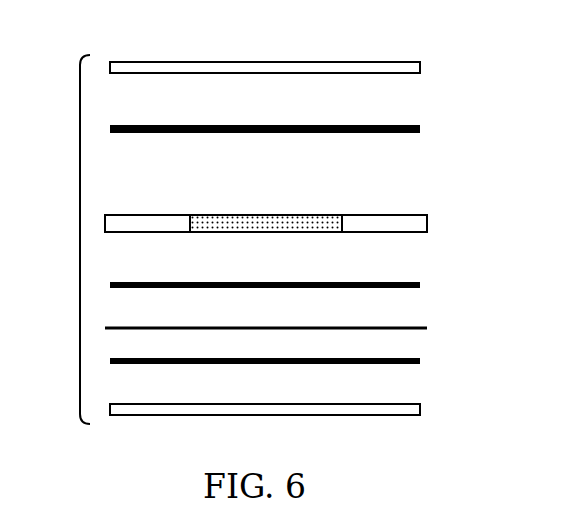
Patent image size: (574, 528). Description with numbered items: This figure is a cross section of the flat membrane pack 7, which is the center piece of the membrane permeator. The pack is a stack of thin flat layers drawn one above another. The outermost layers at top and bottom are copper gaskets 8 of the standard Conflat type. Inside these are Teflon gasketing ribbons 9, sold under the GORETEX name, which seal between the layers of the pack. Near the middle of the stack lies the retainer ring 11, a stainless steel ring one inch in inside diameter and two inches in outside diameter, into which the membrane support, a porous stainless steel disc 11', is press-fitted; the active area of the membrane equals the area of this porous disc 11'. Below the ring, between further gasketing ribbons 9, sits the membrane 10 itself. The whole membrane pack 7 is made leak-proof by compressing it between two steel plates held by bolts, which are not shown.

The membrane pack 7 is at (79, 235).
The copper gasket 8 is at (412, 62).
The Teflon gasketing ribbon 9 is at (408, 125).
The membrane 10 is at (418, 328).
The retainer ring 11 is at (290, 198).
The porous stainless steel disc 11' is at (266, 198).